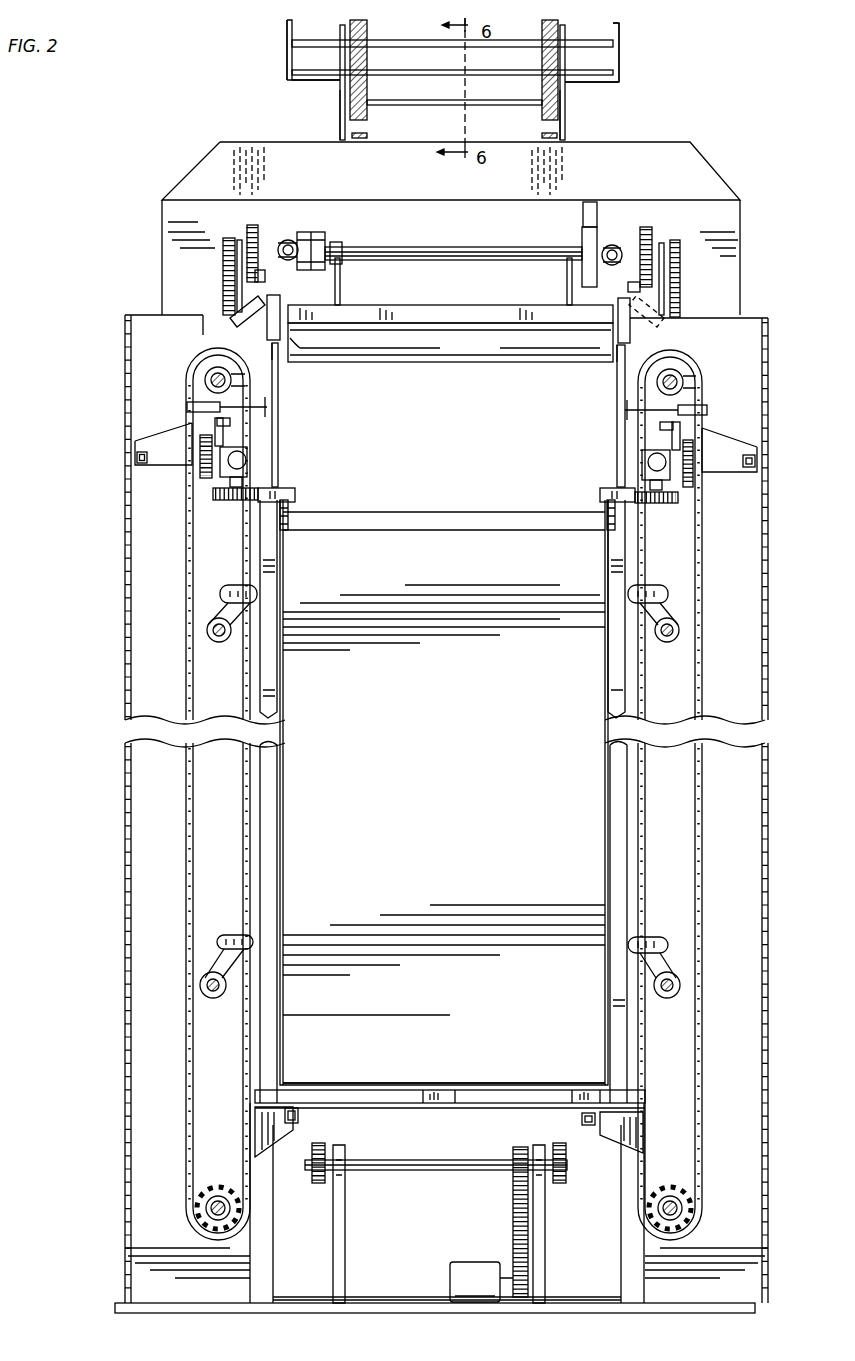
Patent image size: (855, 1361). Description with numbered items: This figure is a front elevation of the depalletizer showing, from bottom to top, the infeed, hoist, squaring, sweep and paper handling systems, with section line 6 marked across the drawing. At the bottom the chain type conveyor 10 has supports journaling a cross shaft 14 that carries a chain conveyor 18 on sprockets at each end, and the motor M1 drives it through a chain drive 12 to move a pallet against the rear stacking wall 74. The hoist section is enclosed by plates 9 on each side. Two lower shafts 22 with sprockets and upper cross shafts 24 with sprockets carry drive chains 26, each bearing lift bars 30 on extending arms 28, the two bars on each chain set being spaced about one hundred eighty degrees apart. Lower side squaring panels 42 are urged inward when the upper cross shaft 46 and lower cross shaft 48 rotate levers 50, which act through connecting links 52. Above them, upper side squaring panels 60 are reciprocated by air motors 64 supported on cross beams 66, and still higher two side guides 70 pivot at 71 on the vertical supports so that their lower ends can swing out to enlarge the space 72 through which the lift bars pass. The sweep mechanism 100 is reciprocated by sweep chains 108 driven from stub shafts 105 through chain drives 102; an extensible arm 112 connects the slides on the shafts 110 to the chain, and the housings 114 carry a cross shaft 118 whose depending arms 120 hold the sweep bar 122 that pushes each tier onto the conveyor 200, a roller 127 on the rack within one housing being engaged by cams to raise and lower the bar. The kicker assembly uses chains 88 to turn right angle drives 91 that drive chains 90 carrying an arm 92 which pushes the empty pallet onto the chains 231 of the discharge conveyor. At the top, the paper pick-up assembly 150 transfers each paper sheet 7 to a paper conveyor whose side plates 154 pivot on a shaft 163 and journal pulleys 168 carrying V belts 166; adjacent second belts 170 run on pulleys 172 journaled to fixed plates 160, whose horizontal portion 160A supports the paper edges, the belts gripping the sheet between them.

The section line / casing bottom 6 is at (445, 1083).
The paper sheet 7 is at (510, 85).
The plates 9 is at (125, 632).
The chain type conveyor 10 is at (416, 1224).
The chain drive 12 is at (513, 1200).
The cross shaft 14 is at (442, 1160).
The chain conveyor 18 is at (330, 1145).
The lower shafts 22 is at (206, 1210).
The upper cross shafts 24 is at (212, 372).
The drive chains 26 is at (186, 1060).
The extending arms 28 is at (653, 1128).
The lift bars 30 is at (137, 458).
The lower side squaring panels 42 is at (277, 760).
The upper cross shaft 46 is at (207, 632).
The lower cross shaft 48 is at (200, 985).
The levers 50 is at (225, 610).
The connecting links 52 is at (238, 585).
The upper side squaring panels 60 is at (278, 432).
The air motors 64 is at (187, 402).
The cross beams 66 is at (447, 434).
The side guides 70 is at (248, 316).
The pivot 71 is at (280, 290).
The space 72 is at (278, 348).
The rear stacking wall 74 is at (486, 843).
The chains 88 is at (200, 480).
The chains 90 is at (222, 502).
The right angle drives 91 is at (445, 468).
The arm 92 is at (290, 492).
The sweep mechanism 100 is at (436, 224).
The chain drives 102 is at (223, 285).
The stub shafts 105 is at (239, 245).
The sweep chains 108 is at (254, 232).
The shafts 110 is at (290, 243).
The extensible arm 112 is at (262, 276).
The housings 114 is at (325, 232).
The cross shaft 118 is at (450, 247).
The depending arms 120 is at (340, 283).
The sweep bar 122 is at (424, 312).
The roller 127 is at (591, 202).
The paper pick-up assembly 150 is at (668, 118).
The side plates 154 is at (340, 31).
The fixed plates 160 is at (287, 64).
The horizontal portion 160A is at (300, 83).
The shaft 163 is at (619, 30).
The V belts 166 is at (367, 23).
The pulleys 168 is at (344, 57).
The second belt 170 is at (345, 80).
The pulleys 172 is at (367, 118).
The conveyor 200 is at (450, 342).
The chains 231 is at (292, 504).
The motor M1 is at (481, 1282).